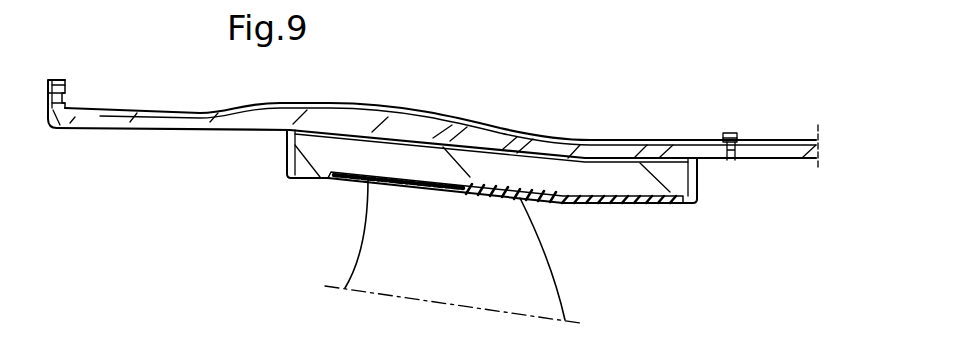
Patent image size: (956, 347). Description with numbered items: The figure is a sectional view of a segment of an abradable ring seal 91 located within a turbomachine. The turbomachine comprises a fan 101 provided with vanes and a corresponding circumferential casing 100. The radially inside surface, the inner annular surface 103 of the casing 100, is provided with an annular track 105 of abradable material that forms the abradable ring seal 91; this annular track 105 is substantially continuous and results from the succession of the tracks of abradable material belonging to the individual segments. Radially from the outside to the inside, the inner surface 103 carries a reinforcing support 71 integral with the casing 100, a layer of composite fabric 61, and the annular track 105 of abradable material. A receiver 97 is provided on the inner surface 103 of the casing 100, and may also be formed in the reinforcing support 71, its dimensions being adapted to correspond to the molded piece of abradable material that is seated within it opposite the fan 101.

The inner annular surface 103 is at (240, 131).
The reinforcing support 71 is at (610, 173).
The abradable ring seal 91 is at (705, 183).
The layer of composite fabric 61 is at (673, 192).
The annular track of abradable material 105 is at (352, 182).
The receiver 97 is at (430, 186).
The casing 100 is at (787, 142).
The fan 101 is at (527, 277).